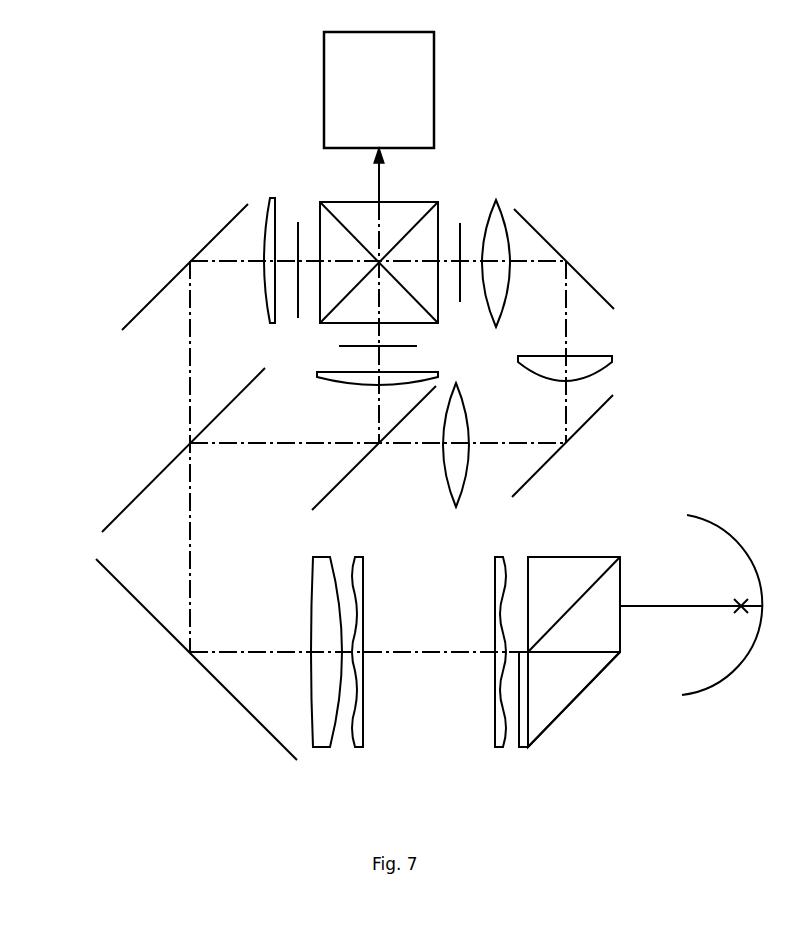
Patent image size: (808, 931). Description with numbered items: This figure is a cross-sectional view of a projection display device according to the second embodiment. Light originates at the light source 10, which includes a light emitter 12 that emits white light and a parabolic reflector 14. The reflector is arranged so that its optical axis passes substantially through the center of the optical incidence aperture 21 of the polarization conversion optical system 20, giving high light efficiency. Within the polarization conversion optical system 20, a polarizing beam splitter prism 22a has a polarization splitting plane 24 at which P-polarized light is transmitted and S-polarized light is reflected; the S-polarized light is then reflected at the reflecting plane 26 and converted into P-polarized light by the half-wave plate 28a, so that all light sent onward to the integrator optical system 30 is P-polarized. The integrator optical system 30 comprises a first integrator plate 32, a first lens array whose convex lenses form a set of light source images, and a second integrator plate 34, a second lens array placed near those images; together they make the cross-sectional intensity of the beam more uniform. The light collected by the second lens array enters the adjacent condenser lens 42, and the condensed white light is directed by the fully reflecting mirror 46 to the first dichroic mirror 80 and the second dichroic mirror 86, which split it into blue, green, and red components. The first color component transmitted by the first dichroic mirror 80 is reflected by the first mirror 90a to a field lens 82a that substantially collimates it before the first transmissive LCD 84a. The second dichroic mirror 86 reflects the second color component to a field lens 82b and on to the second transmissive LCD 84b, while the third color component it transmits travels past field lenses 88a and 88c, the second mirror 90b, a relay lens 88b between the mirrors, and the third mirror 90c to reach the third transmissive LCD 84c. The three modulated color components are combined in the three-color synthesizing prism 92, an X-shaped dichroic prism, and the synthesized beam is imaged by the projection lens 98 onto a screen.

The light source 10 is at (748, 506).
The light emitter 12 is at (736, 612).
The parabolic reflector 14 is at (757, 636).
The polarization conversion optical system 20 is at (572, 538).
The optical incidence aperture 21 is at (622, 577).
The polarizing beam splitter prism 22a is at (582, 675).
The polarization splitting plane 24 is at (618, 557).
The reflecting plane 26 is at (565, 710).
The half-wave plate 28a is at (520, 735).
The integrator optical system 30 is at (412, 534).
The first integrator plate 32 is at (501, 556).
The second integrator plate 34 is at (360, 556).
The condenser lens 42 is at (323, 562).
The fully reflecting mirror 46 is at (250, 713).
The first dichroic mirror 80 is at (162, 474).
The field lens 82a is at (268, 290).
The field lens 82b is at (333, 378).
The first transmissive LCD 84a is at (298, 300).
The second transmissive LCD 84b is at (417, 346).
The third transmissive LCD 84c is at (462, 222).
The second dichroic mirror 86 is at (331, 487).
The field lens 88a is at (446, 455).
The relay lens 88b is at (598, 362).
The field lens 88c is at (505, 297).
The first mirror 90a is at (142, 312).
The second mirror 90b is at (593, 420).
The third mirror 90c is at (585, 282).
The three-color synthesizing prism 92 is at (393, 209).
The projection lens 98 is at (432, 117).